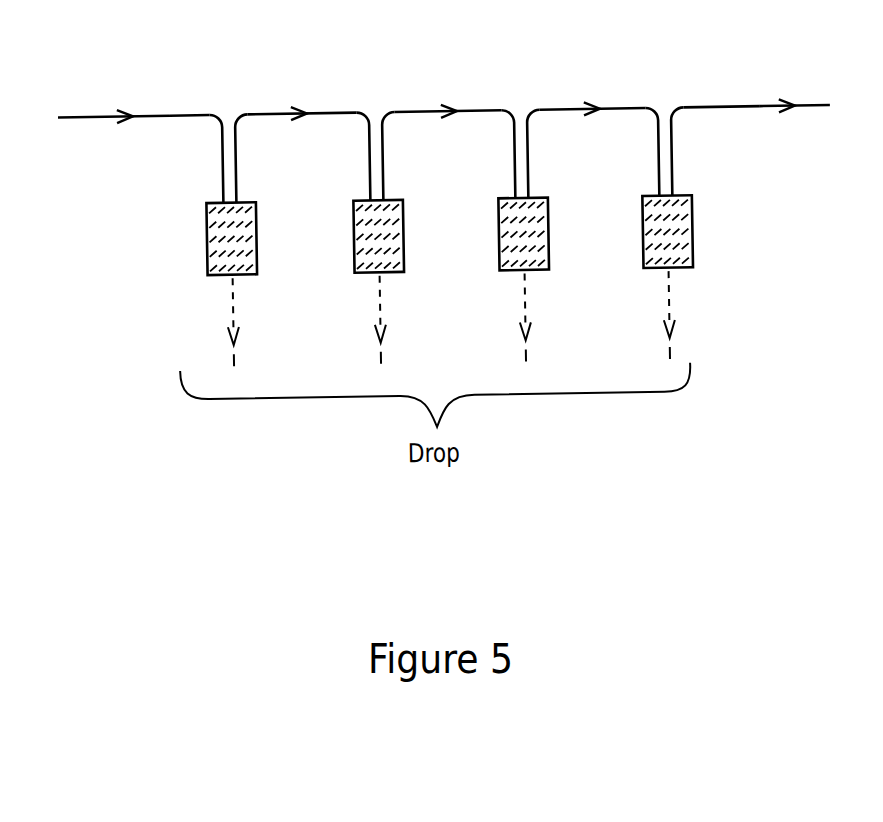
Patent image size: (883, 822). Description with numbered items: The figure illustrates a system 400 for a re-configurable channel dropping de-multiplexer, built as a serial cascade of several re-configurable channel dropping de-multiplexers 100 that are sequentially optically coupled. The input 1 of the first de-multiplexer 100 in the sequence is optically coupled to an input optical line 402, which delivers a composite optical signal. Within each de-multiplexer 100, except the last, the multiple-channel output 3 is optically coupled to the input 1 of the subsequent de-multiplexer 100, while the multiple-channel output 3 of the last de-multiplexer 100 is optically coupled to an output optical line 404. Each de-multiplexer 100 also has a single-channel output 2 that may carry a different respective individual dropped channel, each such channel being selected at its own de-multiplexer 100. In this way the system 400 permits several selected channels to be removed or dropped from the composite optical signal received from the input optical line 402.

The system 400 is at (195, 31).
The input optical line 402 is at (88, 118).
The output optical line 404 is at (818, 118).
The input 1 is at (222, 180).
The single-channel output 2 is at (230, 324).
The multiple-channel output 3 is at (235, 188).
The re-configurable channel dropping de-multiplexer 100 is at (205, 220).